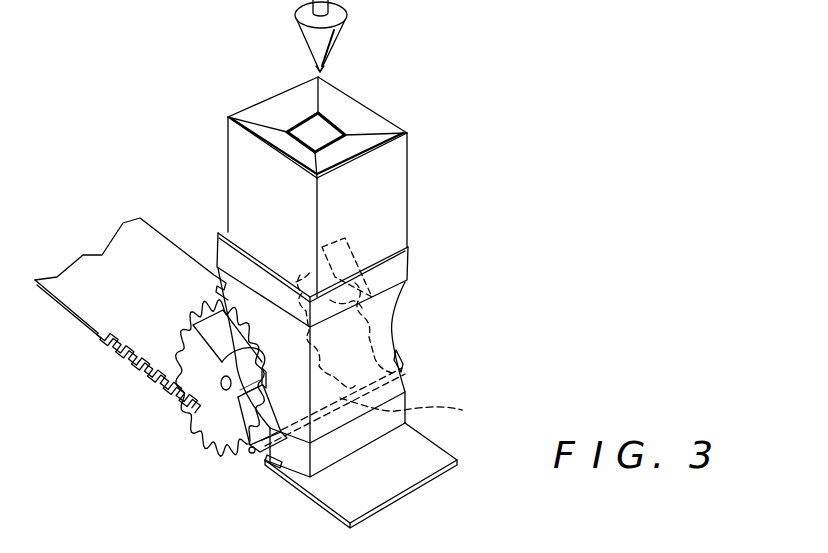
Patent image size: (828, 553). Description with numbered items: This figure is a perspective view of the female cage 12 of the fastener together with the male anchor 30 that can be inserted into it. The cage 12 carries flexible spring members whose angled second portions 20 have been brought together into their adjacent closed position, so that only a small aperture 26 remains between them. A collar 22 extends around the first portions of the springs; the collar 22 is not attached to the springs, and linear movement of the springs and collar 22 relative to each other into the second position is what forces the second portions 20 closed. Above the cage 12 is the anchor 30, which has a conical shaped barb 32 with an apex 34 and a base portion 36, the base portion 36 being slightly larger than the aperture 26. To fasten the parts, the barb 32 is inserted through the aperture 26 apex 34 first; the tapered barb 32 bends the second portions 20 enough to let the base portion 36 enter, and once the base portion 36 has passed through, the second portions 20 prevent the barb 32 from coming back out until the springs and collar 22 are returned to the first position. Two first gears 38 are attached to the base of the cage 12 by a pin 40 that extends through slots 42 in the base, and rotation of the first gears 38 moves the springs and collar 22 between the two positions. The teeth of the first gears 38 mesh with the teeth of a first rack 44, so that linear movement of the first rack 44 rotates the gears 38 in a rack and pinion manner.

The female cage 12 is at (346, 301).
The second portion 20 is at (314, 186).
The collar 22 is at (403, 268).
The aperture 26 is at (337, 130).
The anchor 30 is at (354, 39).
The conical shaped barb 32 is at (303, 35).
The apex 34 is at (323, 75).
The base portion 36 is at (338, 14).
The first gear 38 is at (213, 400).
The pin 40 is at (383, 407).
The slot 42 is at (266, 460).
The first rack 44 is at (88, 296).